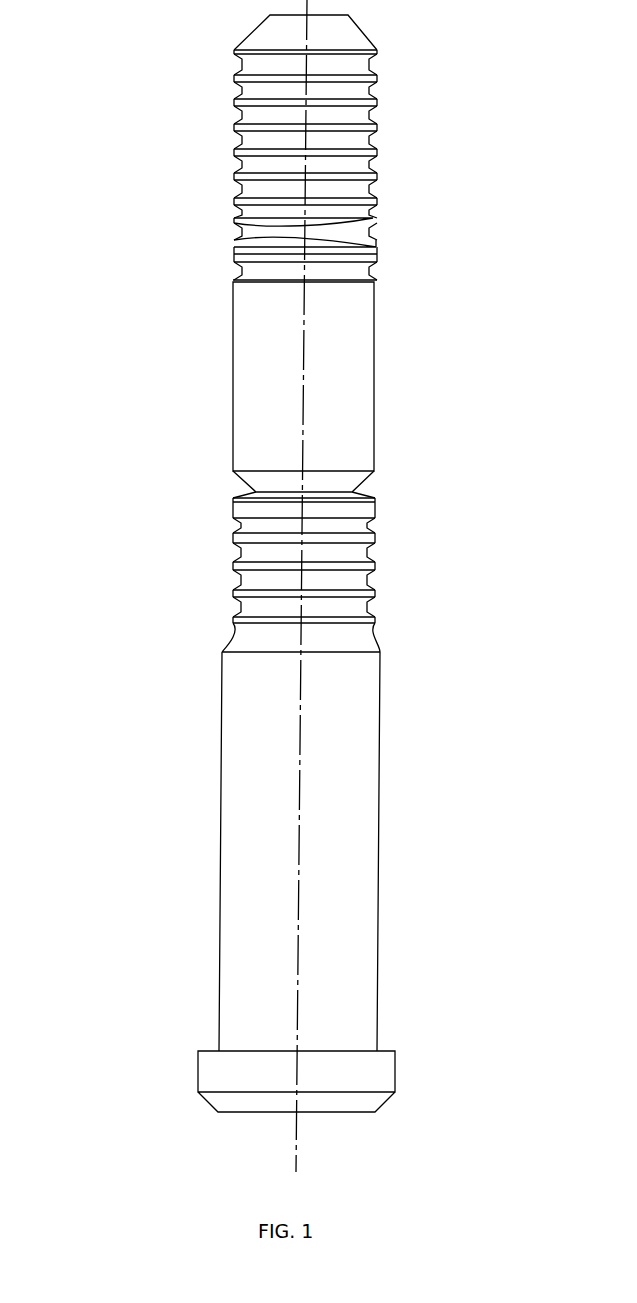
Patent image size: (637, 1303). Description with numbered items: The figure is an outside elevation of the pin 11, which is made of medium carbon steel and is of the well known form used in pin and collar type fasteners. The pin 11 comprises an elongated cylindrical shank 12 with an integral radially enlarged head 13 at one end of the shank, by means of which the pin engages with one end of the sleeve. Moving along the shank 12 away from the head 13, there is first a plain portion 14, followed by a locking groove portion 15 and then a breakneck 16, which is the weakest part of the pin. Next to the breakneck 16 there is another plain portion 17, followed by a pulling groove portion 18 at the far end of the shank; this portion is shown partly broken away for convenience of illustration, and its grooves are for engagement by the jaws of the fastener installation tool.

The pin 11 is at (435, 451).
The shank 12 is at (202, 676).
The head 13 is at (230, 1072).
The plain portion 14 is at (253, 905).
The locking groove portion 15 is at (233, 568).
The breakneck 16 is at (253, 490).
The plain portion 17 is at (252, 372).
The pulling groove portion 18 is at (236, 183).